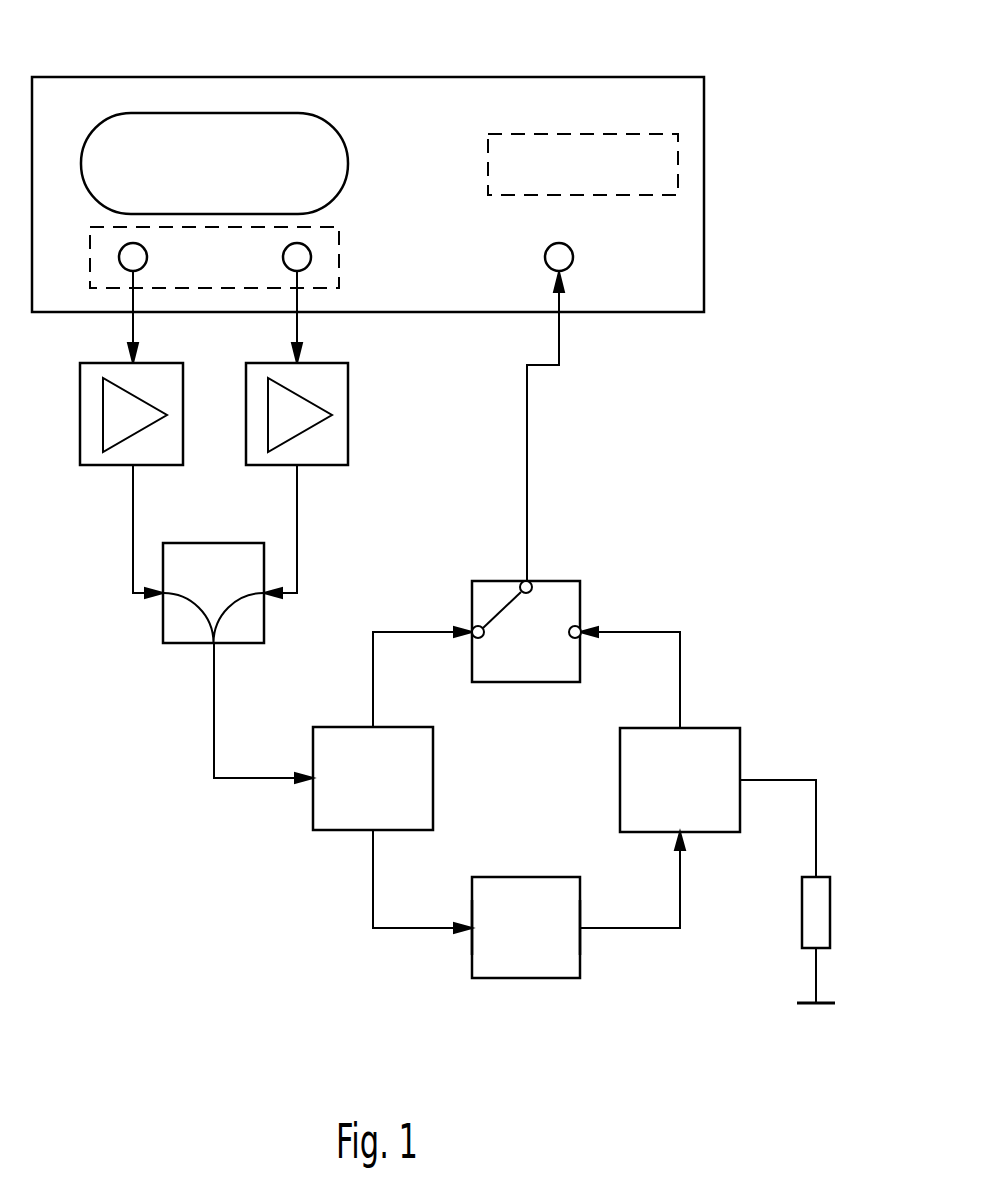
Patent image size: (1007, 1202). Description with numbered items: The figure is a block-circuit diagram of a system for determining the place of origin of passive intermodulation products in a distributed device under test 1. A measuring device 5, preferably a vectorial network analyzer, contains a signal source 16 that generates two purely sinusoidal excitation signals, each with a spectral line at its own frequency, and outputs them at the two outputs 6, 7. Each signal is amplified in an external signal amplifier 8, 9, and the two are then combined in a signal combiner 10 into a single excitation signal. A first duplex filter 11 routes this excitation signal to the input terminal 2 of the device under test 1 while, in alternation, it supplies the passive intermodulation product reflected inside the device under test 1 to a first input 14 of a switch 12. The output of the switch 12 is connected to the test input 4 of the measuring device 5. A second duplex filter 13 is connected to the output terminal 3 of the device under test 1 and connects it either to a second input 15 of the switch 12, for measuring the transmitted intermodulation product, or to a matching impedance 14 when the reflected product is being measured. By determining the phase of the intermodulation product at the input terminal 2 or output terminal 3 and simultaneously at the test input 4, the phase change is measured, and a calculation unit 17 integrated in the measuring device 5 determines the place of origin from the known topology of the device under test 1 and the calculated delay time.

The distributed device under test 1 is at (525, 877).
The input terminal 2 is at (470, 932).
The output terminal 3 is at (583, 932).
The test input 4 is at (573, 257).
The measuring device 5 is at (635, 77).
The first output 6 is at (118, 258).
The second output 7 is at (283, 258).
The first external signal amplifier 8 is at (95, 467).
The second external signal amplifier 9 is at (333, 467).
The signal combiner 10 is at (214, 543).
The first duplex filter 11 is at (338, 727).
The switch 12 is at (557, 581).
The second duplex filter 13 is at (712, 728).
The first input of the switch / matching impedance 14 is at (472, 628).
The second input of the switch 15 is at (581, 628).
The signal source 16 is at (339, 239).
The calculation unit 17 is at (488, 146).